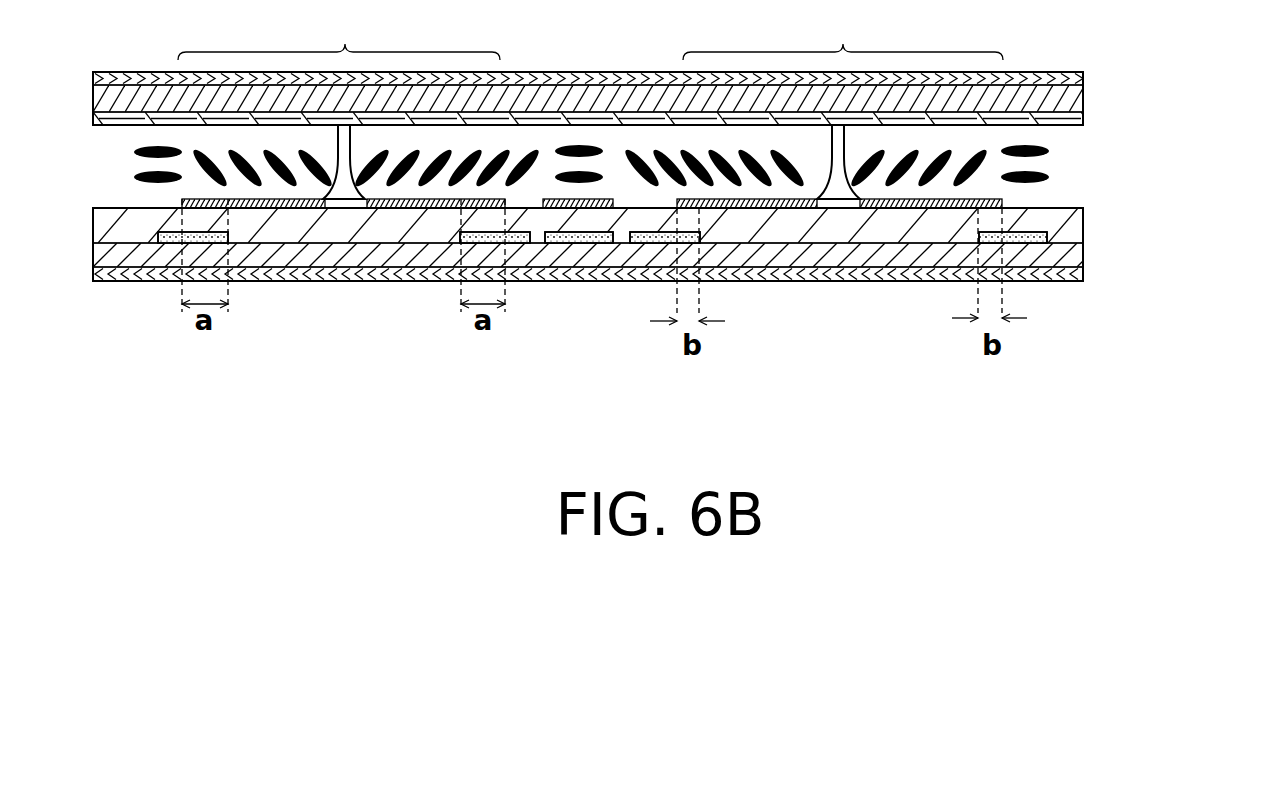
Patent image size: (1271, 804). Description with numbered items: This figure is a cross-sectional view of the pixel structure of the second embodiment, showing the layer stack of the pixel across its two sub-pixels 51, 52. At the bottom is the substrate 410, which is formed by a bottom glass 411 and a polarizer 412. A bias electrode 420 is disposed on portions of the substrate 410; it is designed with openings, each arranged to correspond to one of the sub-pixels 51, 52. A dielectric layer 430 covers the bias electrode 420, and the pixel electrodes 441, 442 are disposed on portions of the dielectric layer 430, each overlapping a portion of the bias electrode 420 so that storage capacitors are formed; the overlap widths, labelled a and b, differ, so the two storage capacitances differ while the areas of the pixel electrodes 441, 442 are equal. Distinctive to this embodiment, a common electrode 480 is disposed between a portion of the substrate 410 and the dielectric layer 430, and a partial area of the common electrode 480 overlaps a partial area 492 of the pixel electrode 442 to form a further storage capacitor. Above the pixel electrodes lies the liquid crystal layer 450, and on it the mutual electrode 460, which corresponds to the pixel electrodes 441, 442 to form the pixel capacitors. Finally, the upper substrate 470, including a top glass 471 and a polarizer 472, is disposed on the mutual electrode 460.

The sub-pixel 51 is at (339, 30).
The sub-pixel 52 is at (843, 30).
The substrate 410 is at (680, 244).
The bottom glass 411 is at (1085, 252).
The polarizer 412 is at (1085, 273).
The bias electrode 420 is at (160, 243).
The dielectric layer 430 is at (1075, 219).
The pixel electrode 441 is at (272, 208).
The pixel electrode 442 is at (758, 208).
The liquid crystal layer 450 is at (1085, 127).
The mutual electrode 460 is at (1085, 115).
The substrate 470 is at (680, 107).
The top glass 471 is at (1085, 95).
The polarizer 472 is at (1085, 75).
The common electrode 480 is at (577, 243).
The partial area of the pixel electrode 492 is at (548, 207).